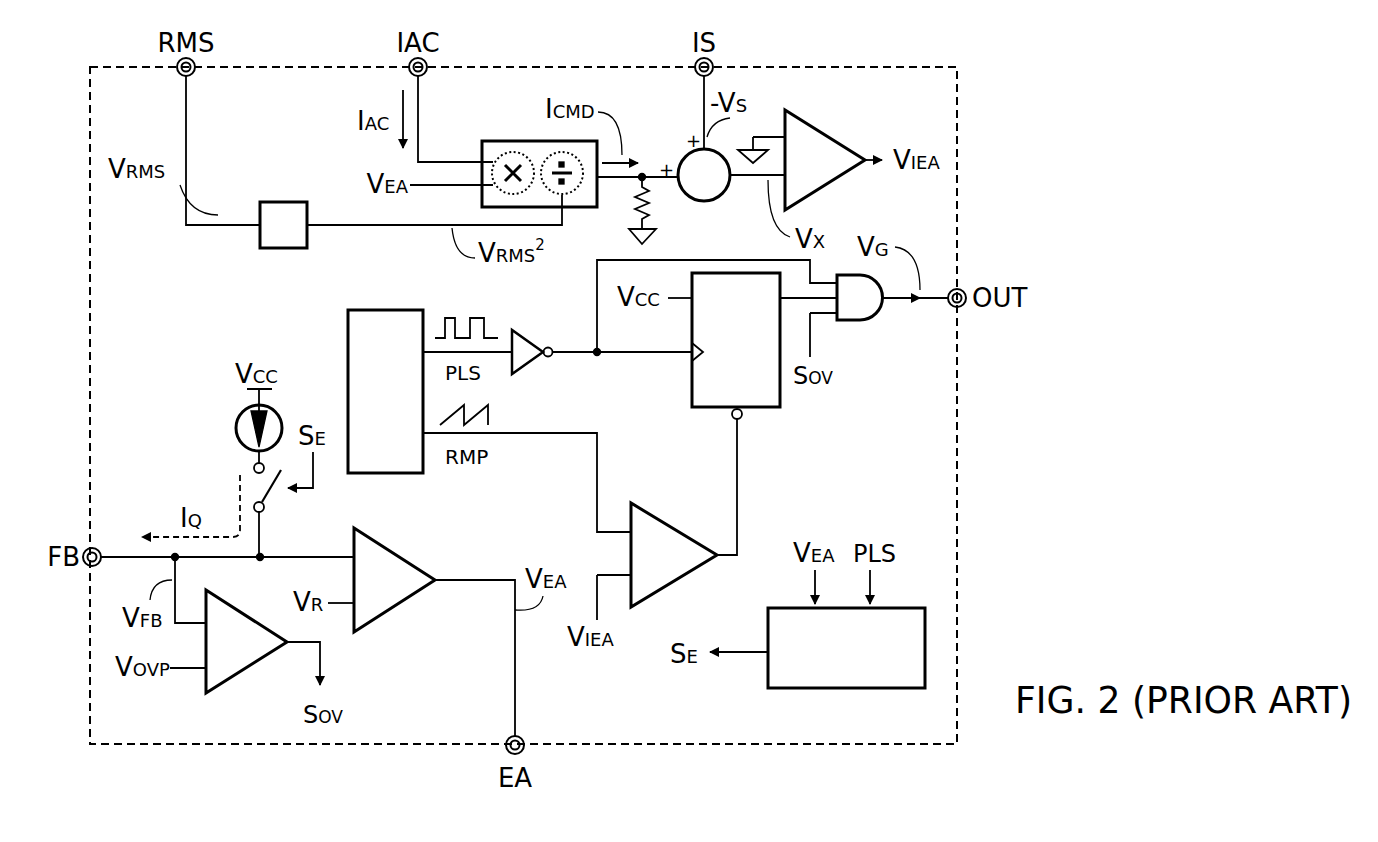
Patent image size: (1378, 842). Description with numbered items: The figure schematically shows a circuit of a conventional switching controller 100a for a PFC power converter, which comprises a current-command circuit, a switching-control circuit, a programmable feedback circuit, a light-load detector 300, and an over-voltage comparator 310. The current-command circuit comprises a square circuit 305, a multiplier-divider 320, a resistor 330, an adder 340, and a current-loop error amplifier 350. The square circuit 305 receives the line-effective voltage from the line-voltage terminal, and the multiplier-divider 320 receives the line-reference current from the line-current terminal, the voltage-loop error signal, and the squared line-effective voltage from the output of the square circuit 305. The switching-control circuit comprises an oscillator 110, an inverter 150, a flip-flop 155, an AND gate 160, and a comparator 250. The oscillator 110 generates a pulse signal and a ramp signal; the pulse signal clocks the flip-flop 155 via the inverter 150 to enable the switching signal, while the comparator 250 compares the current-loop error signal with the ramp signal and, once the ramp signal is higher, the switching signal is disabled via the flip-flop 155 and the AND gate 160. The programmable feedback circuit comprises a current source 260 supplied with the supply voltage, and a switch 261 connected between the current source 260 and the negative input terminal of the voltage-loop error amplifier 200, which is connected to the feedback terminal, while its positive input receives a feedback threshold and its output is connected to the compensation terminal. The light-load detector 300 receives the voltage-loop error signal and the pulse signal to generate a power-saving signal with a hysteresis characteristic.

The conventional switching controller 100a is at (880, 66).
The square circuit 305 is at (255, 207).
The multiplier-divider 320 is at (512, 139).
The resistor 330 is at (652, 198).
The adder 340 is at (708, 202).
The current-loop error amplifier 350 is at (830, 130).
The oscillator 110 is at (375, 308).
The inverter 150 is at (530, 332).
The flip-flop 155 is at (762, 410).
The AND gate 160 is at (853, 322).
The current source 260 is at (235, 428).
The switch 261 is at (272, 500).
The voltage-loop error amplifier 200 is at (395, 552).
The over-voltage comparator 310 is at (243, 673).
The comparator 250 is at (667, 520).
The light-load detector 300 is at (840, 690).